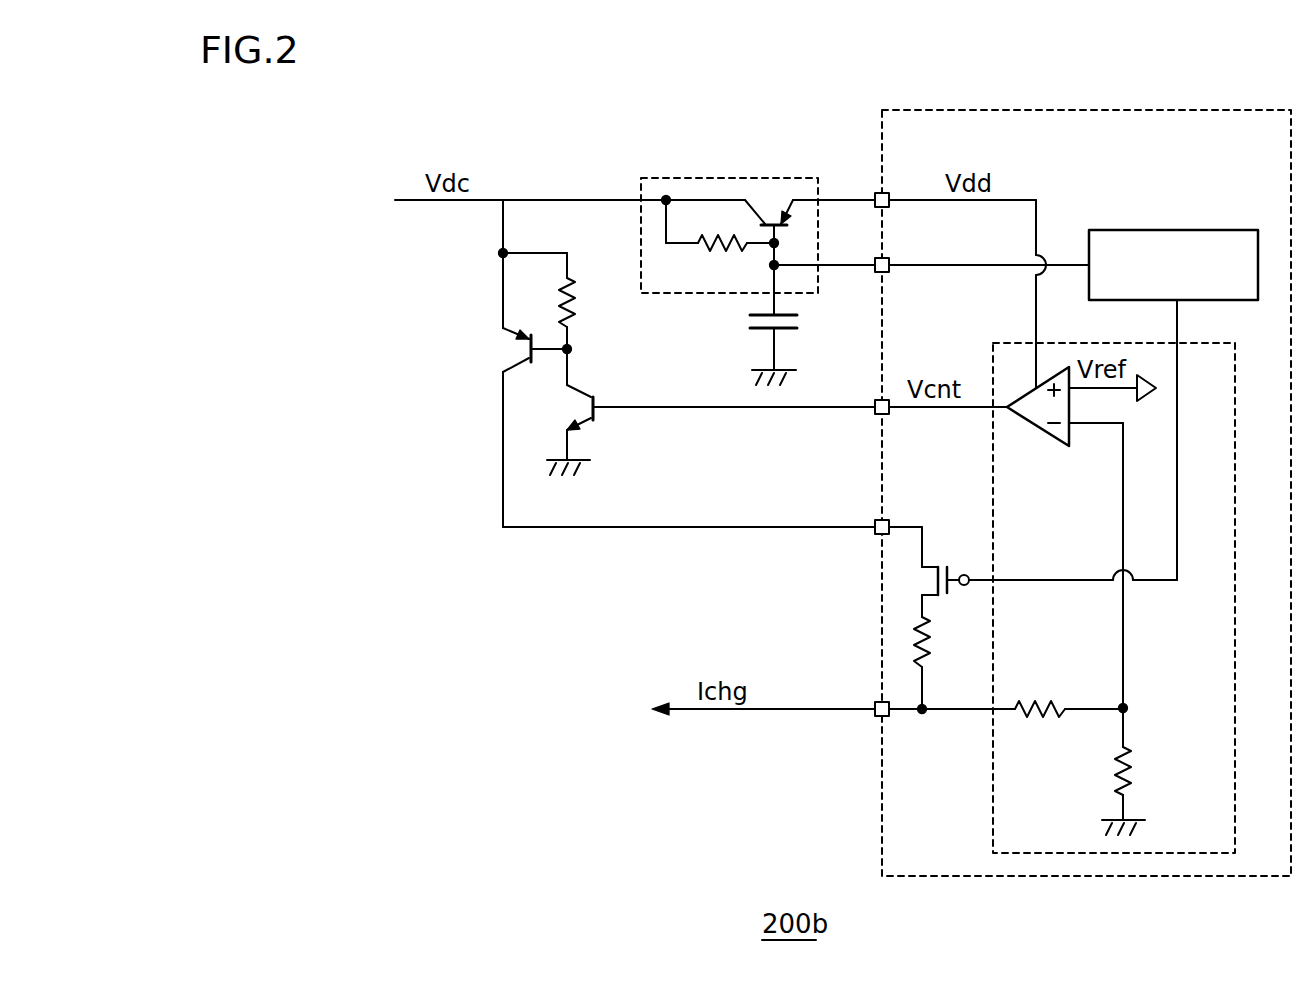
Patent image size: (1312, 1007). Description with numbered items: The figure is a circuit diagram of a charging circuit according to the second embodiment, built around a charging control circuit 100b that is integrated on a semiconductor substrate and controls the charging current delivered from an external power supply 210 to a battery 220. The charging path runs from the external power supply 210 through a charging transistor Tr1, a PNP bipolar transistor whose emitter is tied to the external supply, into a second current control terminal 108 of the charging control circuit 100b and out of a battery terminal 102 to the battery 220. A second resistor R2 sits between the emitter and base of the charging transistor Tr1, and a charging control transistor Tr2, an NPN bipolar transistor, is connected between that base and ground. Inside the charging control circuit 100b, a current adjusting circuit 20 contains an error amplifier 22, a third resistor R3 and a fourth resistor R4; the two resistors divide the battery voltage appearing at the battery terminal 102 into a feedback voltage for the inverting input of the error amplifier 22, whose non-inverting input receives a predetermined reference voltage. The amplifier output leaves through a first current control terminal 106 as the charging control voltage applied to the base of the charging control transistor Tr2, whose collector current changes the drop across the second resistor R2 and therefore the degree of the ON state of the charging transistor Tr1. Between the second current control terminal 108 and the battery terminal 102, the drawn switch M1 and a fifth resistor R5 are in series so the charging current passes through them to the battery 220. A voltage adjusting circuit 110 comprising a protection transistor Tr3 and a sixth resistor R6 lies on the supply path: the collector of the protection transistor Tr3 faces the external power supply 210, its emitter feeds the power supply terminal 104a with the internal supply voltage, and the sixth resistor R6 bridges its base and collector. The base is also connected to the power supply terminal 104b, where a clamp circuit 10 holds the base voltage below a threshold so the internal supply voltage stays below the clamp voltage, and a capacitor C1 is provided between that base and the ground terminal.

The charging control circuit 100b is at (1140, 110).
The voltage adjusting circuit 110 is at (757, 178).
The clamp circuit 10 is at (1205, 230).
The current adjusting circuit 20 is at (1235, 377).
The error amplifier 22 is at (1040, 430).
The power supply terminal 104a is at (890, 205).
The power supply terminal 104b is at (890, 270).
The first current control terminal 106 is at (890, 412).
The second current control terminal 108 is at (876, 531).
The battery terminal 102 is at (890, 715).
The external power supply 210 is at (421, 201).
The battery 220 is at (739, 709).
The charging transistor Tr1 is at (512, 352).
The charging control transistor Tr2 is at (578, 392).
The protection transistor Tr3 is at (788, 213).
The second resistor R2 is at (586, 302).
The third resistor R3 is at (1040, 727).
The fourth resistor R4 is at (1142, 771).
The fifth resistor R5 is at (942, 642).
The sixth resistor R6 is at (722, 259).
The capacitor C1 is at (750, 320).
The MOS transistor M1 is at (945, 563).